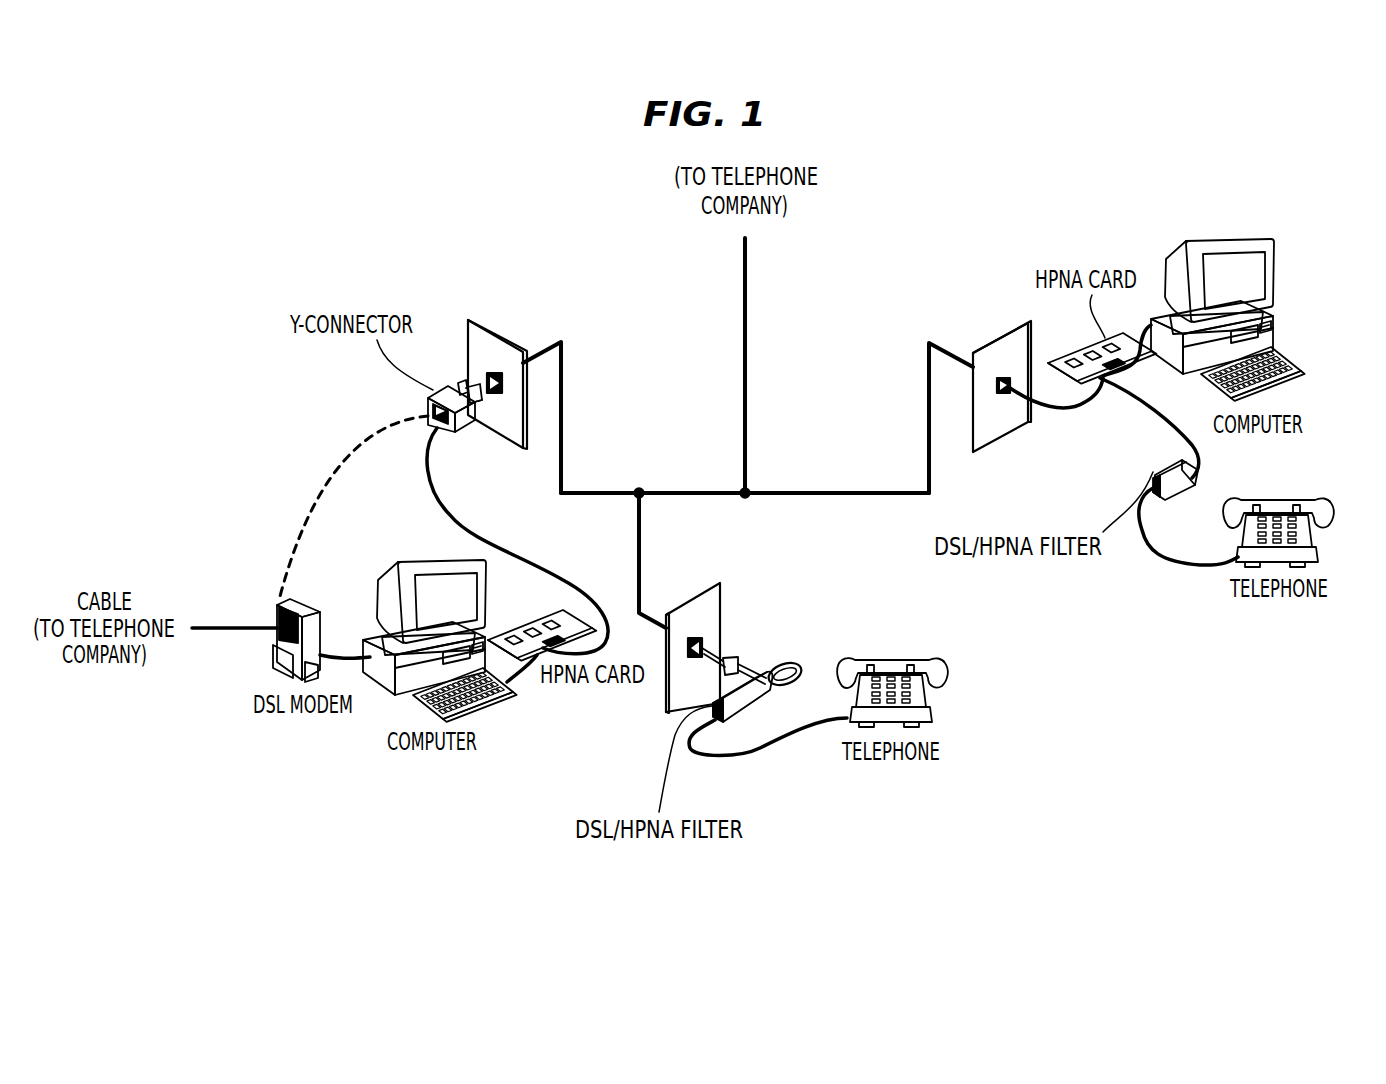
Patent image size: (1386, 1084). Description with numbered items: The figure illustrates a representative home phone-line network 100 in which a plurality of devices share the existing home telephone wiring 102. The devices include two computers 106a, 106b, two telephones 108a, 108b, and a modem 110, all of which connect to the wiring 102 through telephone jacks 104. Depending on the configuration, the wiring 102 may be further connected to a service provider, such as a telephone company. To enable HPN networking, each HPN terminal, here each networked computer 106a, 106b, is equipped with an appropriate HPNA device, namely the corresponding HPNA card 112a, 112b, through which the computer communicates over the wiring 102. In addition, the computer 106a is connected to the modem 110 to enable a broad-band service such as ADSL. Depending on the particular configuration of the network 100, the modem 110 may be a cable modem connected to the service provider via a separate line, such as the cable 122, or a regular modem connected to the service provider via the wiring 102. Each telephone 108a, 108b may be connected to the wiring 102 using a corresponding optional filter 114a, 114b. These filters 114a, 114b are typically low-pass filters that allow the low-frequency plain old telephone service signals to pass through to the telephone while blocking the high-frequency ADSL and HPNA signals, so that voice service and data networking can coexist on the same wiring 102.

The home phone-line network 100 is at (600, 211).
The home telephone wiring 102 is at (838, 490).
The telephone jacks 104 is at (520, 352).
The computer 106a is at (380, 693).
The computer 106b is at (1242, 240).
The telephone 108a is at (897, 657).
The telephone 108b is at (1318, 500).
The modem 110 is at (278, 607).
The HPNA card 112a is at (513, 627).
The HPNA card 112b is at (1060, 360).
The filter 114a is at (740, 712).
The filter 114b is at (1190, 483).
The separate line (cable) 122 is at (233, 633).